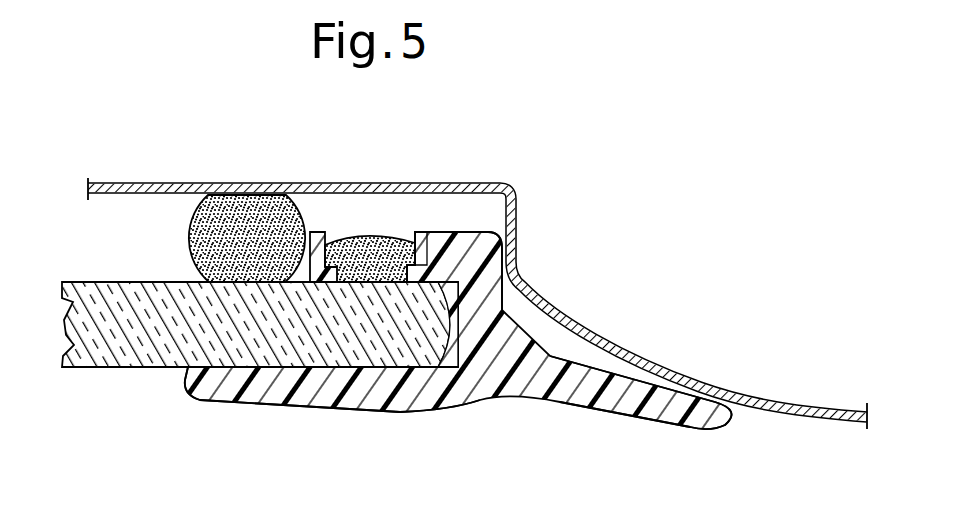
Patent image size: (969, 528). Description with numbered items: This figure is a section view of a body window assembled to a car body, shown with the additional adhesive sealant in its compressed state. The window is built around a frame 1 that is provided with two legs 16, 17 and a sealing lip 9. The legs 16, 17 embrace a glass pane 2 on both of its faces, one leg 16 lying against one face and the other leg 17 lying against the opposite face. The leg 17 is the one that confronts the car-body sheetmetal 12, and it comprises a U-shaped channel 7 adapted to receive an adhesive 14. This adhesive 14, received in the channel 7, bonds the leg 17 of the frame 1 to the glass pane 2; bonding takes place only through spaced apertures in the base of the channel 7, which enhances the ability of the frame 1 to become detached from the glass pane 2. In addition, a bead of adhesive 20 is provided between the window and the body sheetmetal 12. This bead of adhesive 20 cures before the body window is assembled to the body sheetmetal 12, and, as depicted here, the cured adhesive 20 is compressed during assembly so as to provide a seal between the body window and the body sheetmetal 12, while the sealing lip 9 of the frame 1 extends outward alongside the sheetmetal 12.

The frame 1 is at (563, 405).
The glass pane 2 is at (115, 343).
The U-shaped channel 7 is at (408, 230).
The sealing lip 9 is at (670, 410).
The car-body sheetmetal 12 is at (517, 204).
The adhesive 14 is at (362, 243).
The leg 16 is at (278, 388).
The leg 17 is at (457, 242).
The bead of adhesive 20 is at (207, 234).